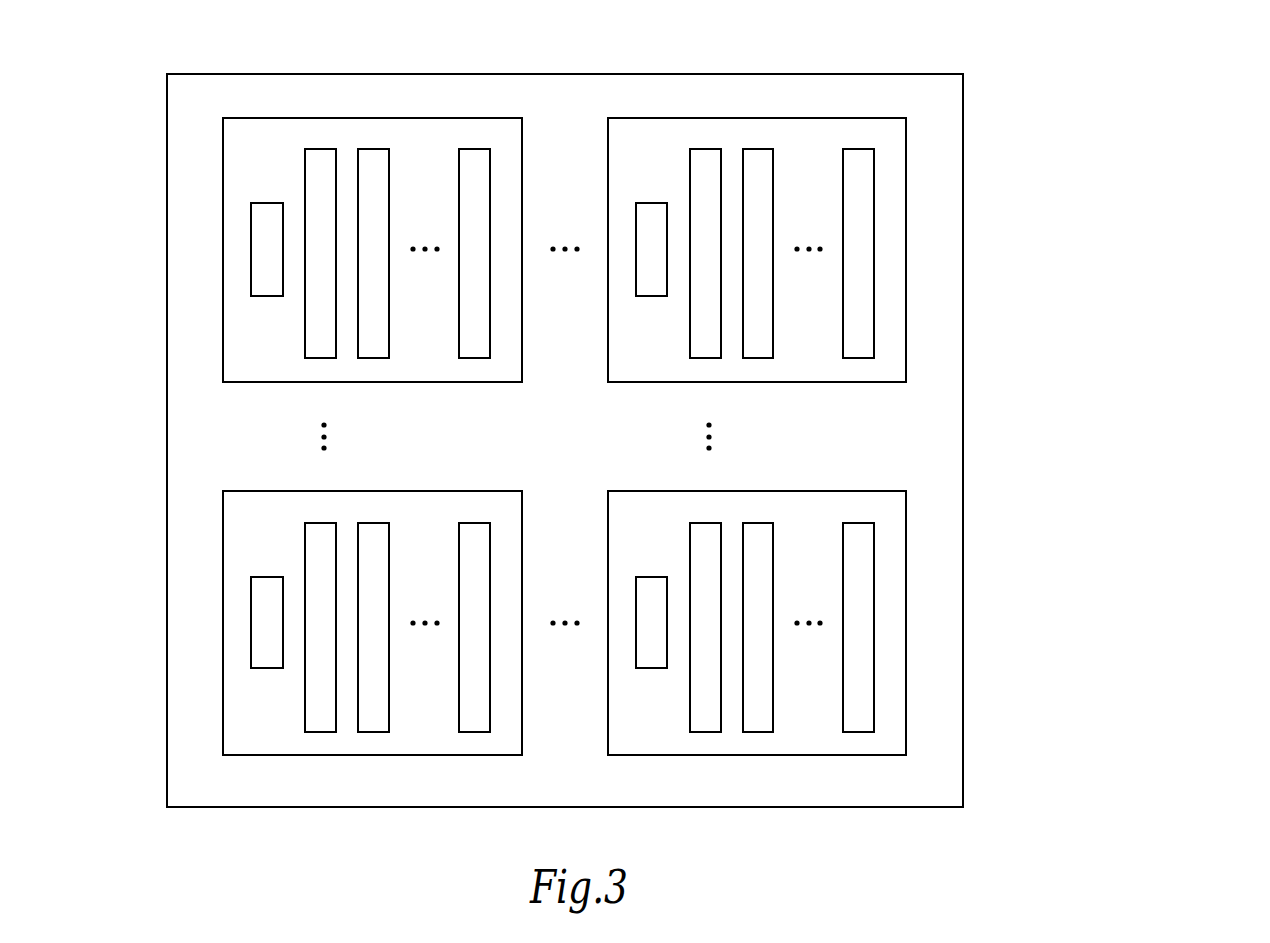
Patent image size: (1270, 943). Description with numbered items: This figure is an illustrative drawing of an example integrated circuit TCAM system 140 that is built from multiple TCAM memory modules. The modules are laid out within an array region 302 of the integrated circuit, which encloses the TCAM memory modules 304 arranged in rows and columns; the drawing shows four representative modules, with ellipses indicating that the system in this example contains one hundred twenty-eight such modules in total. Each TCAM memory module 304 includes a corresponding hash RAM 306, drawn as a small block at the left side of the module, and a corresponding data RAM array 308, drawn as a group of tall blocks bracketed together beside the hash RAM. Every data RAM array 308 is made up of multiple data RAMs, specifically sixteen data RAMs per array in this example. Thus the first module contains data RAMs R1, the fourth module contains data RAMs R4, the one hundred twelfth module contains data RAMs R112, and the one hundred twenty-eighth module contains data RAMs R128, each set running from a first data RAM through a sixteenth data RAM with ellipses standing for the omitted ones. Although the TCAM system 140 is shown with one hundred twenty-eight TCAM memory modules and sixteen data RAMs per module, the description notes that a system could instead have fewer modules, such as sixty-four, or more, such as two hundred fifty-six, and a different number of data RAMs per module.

The integrated circuit TCAM system 140 is at (1165, 78).
The array region 302 is at (565, 74).
The TCAM memory module 304 is at (987, 508).
The hash RAM 306 is at (650, 577).
The data RAM array 308 is at (874, 499).
The data RAMs of the first data RAM array R1 is at (488, 103).
The data RAMs of a data RAM array R4 is at (872, 103).
The data RAMs of a data RAM array R112 is at (488, 770).
The data RAMs of the one hundred twenty-eighth data RAM array R128 is at (872, 770).